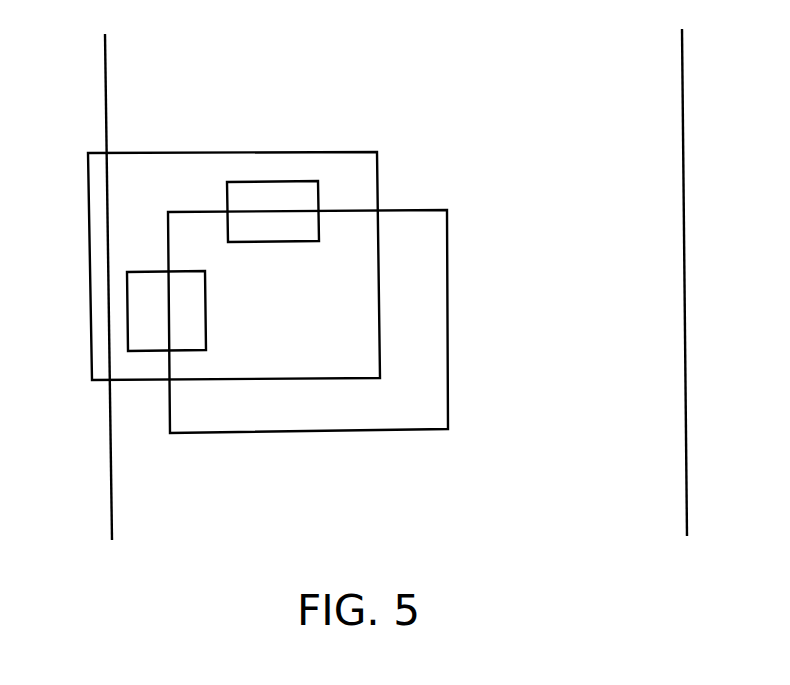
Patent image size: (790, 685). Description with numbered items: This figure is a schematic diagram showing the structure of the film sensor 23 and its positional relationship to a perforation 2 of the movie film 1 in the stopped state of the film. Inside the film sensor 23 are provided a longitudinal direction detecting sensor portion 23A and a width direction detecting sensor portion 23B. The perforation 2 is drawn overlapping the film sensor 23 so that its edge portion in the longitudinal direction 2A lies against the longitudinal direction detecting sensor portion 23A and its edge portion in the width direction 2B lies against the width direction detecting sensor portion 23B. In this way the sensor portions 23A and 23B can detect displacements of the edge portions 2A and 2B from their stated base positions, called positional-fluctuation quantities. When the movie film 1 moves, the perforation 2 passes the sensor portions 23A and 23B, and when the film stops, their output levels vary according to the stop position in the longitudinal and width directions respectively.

The movie film 1 is at (685, 222).
The perforation 2 is at (440, 417).
The edge portion in the longitudinal direction 2A is at (188, 212).
The edge portion in the width direction 2B is at (167, 223).
The film sensor 23 is at (379, 161).
The longitudinal direction detecting sensor portion 23A is at (272, 195).
The width direction detecting sensor portion 23B is at (147, 342).